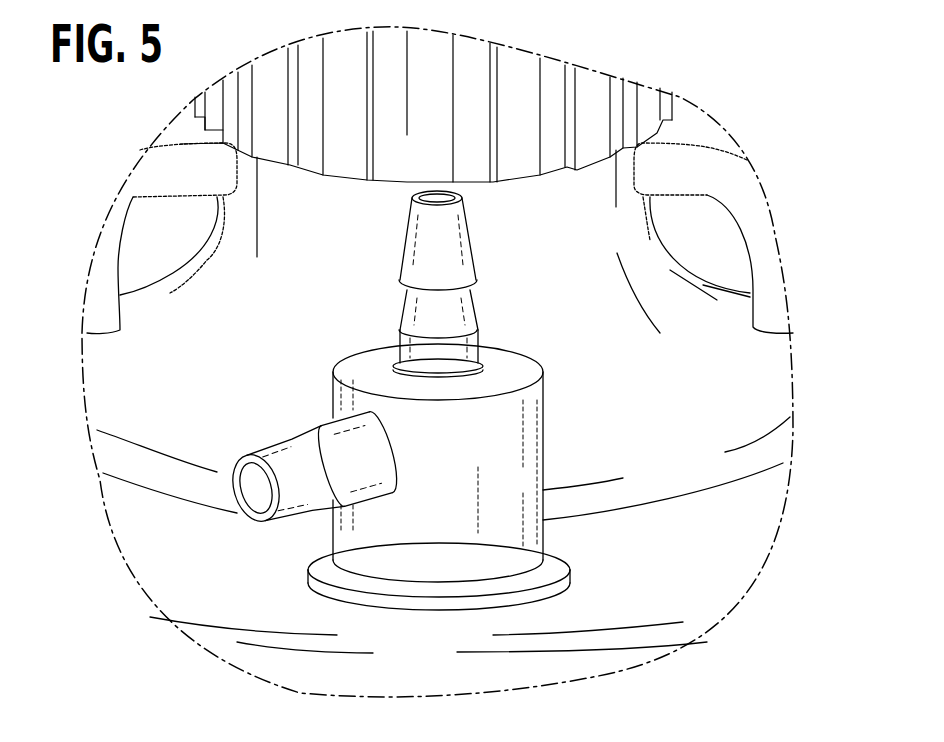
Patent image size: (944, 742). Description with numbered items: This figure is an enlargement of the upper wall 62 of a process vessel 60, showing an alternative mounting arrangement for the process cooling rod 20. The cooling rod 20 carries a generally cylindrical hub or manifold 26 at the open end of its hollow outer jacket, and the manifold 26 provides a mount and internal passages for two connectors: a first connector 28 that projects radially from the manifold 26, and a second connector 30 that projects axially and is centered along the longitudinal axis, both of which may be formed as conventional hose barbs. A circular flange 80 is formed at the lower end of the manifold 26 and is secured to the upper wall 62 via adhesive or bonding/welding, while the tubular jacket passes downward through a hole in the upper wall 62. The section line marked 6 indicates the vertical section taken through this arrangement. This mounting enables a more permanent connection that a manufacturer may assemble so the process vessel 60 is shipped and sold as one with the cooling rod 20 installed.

The section line 6- 6 is at (437, 200).
The process cooling rod 20 is at (317, 376).
The manifold 26 is at (545, 432).
The first connector 28 is at (280, 438).
The second connector 30 is at (403, 243).
The process vessel 60 is at (727, 341).
The upper wall 62 is at (138, 532).
The circular flange 80 is at (553, 550).